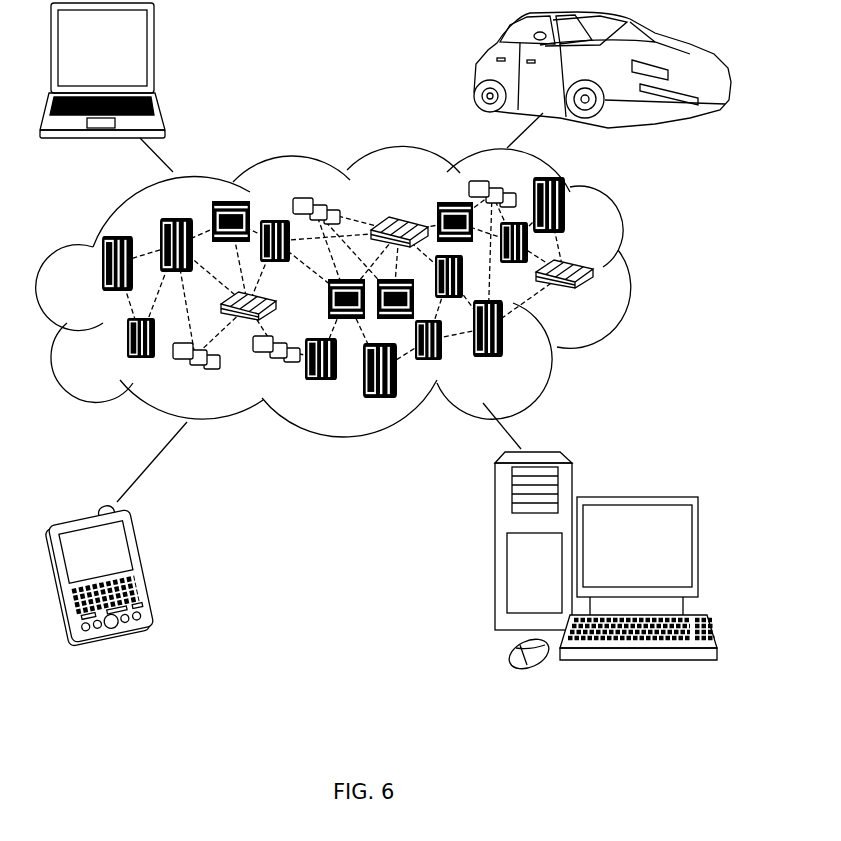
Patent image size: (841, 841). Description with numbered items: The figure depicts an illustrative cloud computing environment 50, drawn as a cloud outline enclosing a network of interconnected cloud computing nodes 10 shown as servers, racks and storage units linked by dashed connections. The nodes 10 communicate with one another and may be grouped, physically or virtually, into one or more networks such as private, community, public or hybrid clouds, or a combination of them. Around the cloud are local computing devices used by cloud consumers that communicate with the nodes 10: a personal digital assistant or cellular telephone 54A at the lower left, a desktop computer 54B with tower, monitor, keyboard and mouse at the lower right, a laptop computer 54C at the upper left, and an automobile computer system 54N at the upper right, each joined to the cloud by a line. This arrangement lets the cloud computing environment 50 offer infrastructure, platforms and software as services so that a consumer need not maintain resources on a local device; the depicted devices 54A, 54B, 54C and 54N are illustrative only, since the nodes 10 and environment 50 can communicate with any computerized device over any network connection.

The cloud computing node 10 is at (598, 295).
The cloud computing environment 50 is at (637, 267).
The personal digital assistant or cellular telephone 54A is at (147, 568).
The desktop computer 54B is at (635, 497).
The laptop computer 54C is at (155, 61).
The automobile computer system 54N is at (478, 72).